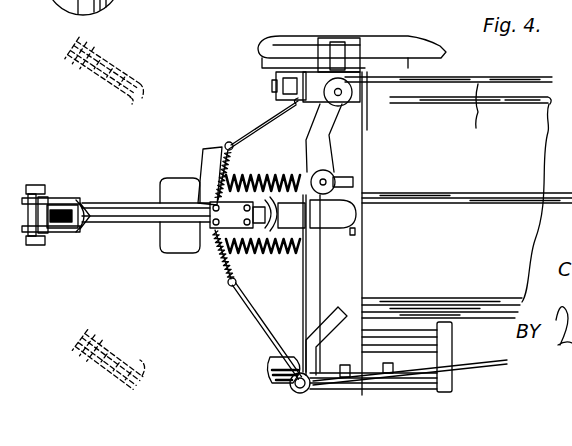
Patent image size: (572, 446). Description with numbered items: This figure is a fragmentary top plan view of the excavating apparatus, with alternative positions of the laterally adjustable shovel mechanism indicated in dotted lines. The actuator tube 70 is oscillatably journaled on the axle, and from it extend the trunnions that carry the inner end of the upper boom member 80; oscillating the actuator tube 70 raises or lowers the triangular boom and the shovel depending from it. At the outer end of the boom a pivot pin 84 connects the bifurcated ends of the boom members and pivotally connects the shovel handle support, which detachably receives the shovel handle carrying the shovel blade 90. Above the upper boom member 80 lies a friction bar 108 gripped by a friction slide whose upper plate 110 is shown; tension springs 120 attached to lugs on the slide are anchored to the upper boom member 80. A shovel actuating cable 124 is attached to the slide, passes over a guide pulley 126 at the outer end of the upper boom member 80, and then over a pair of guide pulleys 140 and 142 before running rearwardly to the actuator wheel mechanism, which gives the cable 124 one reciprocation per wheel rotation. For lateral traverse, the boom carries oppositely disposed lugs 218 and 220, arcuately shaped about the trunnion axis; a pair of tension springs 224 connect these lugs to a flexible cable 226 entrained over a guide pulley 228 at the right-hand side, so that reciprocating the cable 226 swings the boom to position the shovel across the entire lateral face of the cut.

The actuator tube 70 is at (355, 263).
The upper boom member 80 is at (125, 208).
The pivot pin 84 is at (30, 247).
The shovel blade 90 is at (163, 198).
The friction bar 108 is at (157, 217).
The upper plate 110 is at (205, 203).
The tension springs 120 is at (267, 180).
The shovel actuating cable 124 is at (333, 147).
The guide pulley 126 is at (67, 226).
The guide pulley 140 is at (337, 180).
The guide pulley 142 is at (348, 101).
The lug 218 is at (208, 168).
The lug 220 is at (225, 280).
The tension springs 224 is at (228, 142).
The flexible cable 226 is at (250, 131).
The guide pulley 228 is at (303, 107).